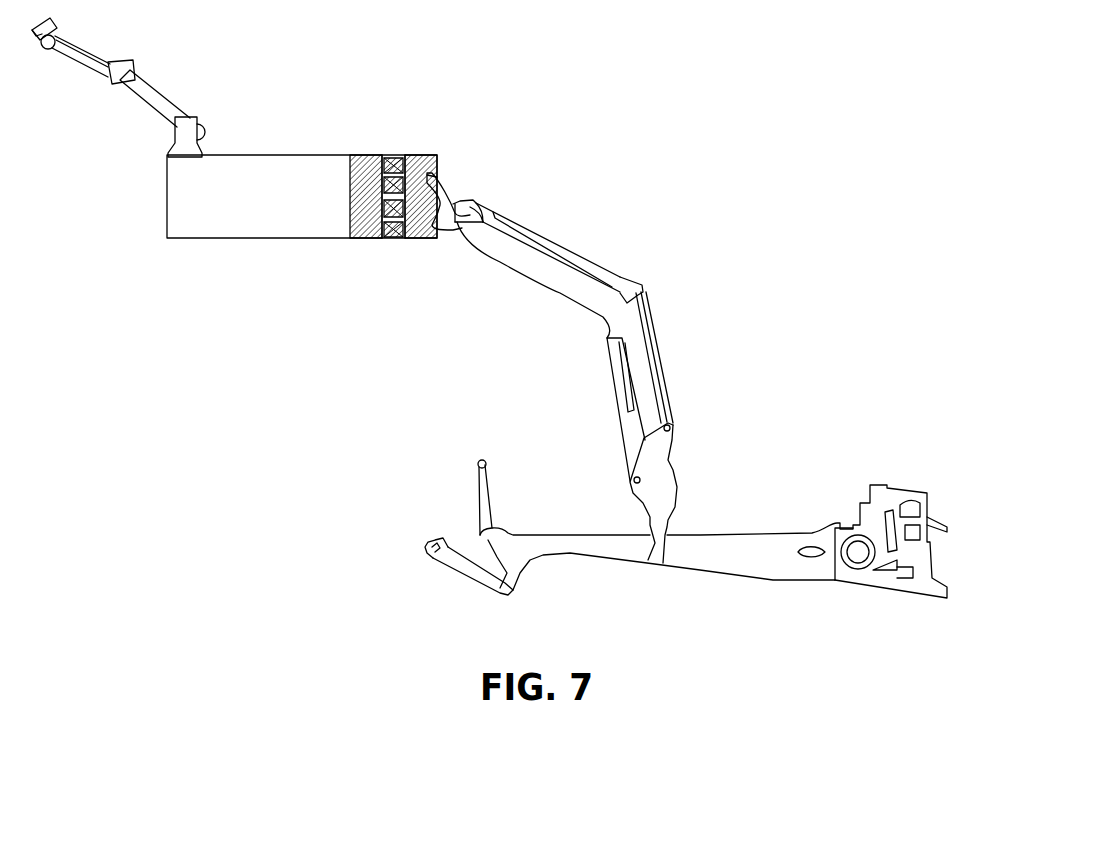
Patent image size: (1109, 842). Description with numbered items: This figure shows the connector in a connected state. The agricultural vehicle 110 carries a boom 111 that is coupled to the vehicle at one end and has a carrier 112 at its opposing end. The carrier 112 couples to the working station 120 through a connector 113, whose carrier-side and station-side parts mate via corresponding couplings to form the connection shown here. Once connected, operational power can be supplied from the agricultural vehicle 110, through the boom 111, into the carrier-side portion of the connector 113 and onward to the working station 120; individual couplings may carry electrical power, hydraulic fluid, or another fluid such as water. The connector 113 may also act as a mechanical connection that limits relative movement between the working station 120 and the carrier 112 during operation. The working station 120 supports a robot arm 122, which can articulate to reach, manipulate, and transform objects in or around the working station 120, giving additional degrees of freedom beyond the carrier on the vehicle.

The agricultural vehicle 110 is at (660, 222).
The boom 111 is at (519, 254).
The carrier 112 is at (447, 183).
The connector 113 is at (387, 244).
The working station 120 is at (281, 190).
The robot arm 122 is at (160, 88).